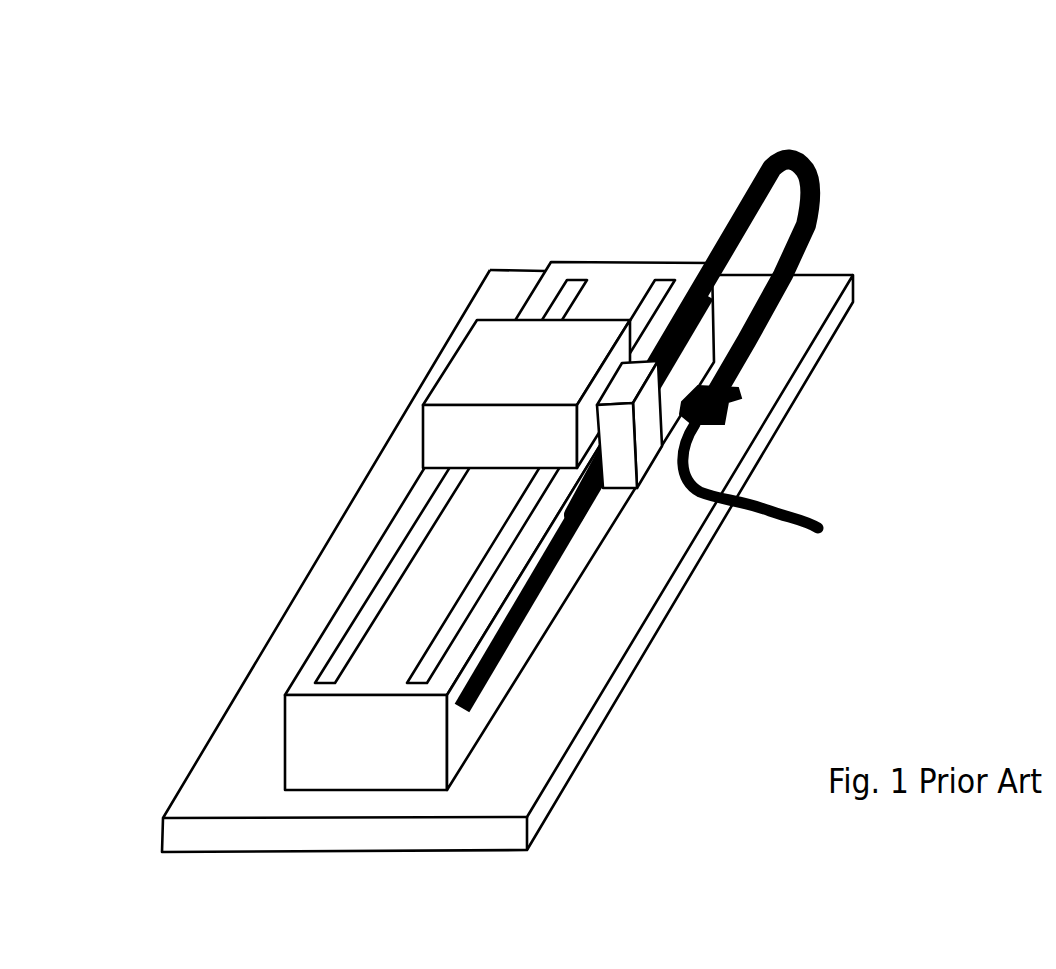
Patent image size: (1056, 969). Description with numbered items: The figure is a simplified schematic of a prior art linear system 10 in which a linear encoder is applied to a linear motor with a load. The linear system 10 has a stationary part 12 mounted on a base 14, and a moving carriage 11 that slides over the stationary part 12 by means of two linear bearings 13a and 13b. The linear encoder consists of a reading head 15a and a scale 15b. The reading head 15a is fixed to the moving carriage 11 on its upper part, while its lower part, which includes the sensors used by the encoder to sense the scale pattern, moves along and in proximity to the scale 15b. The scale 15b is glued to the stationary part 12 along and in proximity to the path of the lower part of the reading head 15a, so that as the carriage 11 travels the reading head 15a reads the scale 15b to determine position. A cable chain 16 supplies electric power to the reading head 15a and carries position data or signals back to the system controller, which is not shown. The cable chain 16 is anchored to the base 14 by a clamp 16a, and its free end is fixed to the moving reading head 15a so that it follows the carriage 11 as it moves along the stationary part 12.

The linear system 10 is at (515, 445).
The moving carriage 11 is at (495, 365).
The stationary part 12 is at (442, 562).
The linear bearing 13a is at (438, 638).
The linear bearing 13b is at (343, 640).
The base 14 is at (247, 763).
The reading head 15a is at (643, 438).
The scale 15b is at (533, 608).
The cable chain 16 is at (760, 212).
The clamp 16a is at (732, 408).